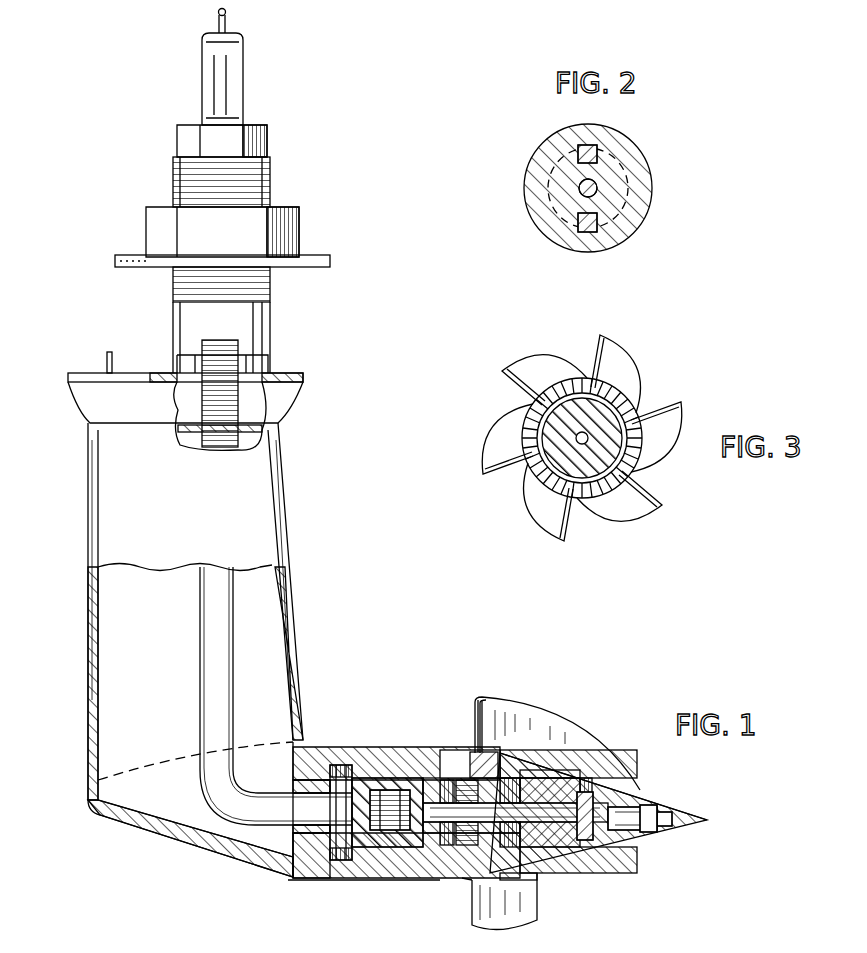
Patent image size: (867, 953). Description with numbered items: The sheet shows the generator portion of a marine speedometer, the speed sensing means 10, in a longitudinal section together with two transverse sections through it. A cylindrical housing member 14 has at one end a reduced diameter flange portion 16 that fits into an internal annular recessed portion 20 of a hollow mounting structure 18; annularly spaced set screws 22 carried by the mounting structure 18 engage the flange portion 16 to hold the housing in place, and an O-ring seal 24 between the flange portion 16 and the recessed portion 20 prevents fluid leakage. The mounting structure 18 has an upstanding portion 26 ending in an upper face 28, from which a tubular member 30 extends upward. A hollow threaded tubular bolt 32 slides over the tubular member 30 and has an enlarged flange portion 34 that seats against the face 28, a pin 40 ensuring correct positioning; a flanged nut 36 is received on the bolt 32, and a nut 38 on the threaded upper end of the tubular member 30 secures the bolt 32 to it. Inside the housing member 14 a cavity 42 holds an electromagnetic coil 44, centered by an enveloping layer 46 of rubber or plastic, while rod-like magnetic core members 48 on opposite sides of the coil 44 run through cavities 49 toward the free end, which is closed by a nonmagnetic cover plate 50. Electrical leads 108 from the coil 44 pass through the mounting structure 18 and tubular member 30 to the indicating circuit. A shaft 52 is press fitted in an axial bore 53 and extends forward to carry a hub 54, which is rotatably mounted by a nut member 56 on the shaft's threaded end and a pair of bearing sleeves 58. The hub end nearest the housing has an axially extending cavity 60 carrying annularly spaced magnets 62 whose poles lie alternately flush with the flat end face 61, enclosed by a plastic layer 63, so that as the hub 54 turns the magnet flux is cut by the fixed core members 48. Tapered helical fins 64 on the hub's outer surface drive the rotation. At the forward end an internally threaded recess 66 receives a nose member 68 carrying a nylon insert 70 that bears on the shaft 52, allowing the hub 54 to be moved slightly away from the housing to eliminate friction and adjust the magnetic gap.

In FIG. 1, the speed sensing means 10 is at (243, 878).
In FIG. 1, the cylindrical housing member 14 is at (357, 870).
In FIG. 2, the cylindrical housing member 14 is at (650, 212).
In FIG. 1, the flange portion 16 is at (320, 878).
In FIG. 1, the hollow mounting structure 18 is at (298, 519).
In FIG. 1, the internal annular recessed portion 20 is at (332, 770).
In FIG. 1, the set screws 22 is at (348, 778).
In FIG. 1, the O-ring seal 24 is at (290, 878).
In FIG. 1, the upstanding portion 26 is at (300, 640).
In FIG. 1, the upper face 28 is at (270, 430).
In FIG. 1, the tubular member 30 is at (240, 350).
In FIG. 1, the hollow threaded tubular bolt 32 is at (270, 322).
In FIG. 1, the enlarged flange portion 34 is at (78, 373).
In FIG. 1, the flanged nut 36 is at (300, 222).
In FIG. 1, the nut 38 is at (268, 142).
In FIG. 1, the pin 40 is at (113, 358).
In FIG. 1, the cavity 42 is at (378, 778).
In FIG. 2, the cavity 42 is at (612, 182).
In FIG. 1, the electromagnetic coil 44 is at (400, 835).
In FIG. 1, the enveloping layer 46 is at (340, 862).
In FIG. 1, the magnetic core members 48 is at (446, 778).
In FIG. 2, the magnetic core members 48 is at (600, 150).
In FIG. 1, the cavities 49 is at (462, 778).
In FIG. 1, the cover plate 50 is at (480, 700).
In FIG. 1, the shaft 52 is at (412, 778).
In FIG. 2, the shaft 52 is at (562, 236).
In FIG. 3, the shaft 52 is at (588, 395).
In FIG. 1, the axial bore 53 is at (440, 760).
In FIG. 1, the hub 54 is at (595, 862).
In FIG. 3, the hub 54 is at (640, 442).
In FIG. 1, the nut member 56 is at (612, 778).
In FIG. 1, the bearing sleeves 58 is at (496, 768).
In FIG. 1, the axially extending cavity 60 is at (492, 880).
In FIG. 1, the flat end face 61 is at (462, 882).
In FIG. 1, the magnets 62 is at (540, 790).
In FIG. 3, the magnets 62 is at (540, 405).
In FIG. 1, the enveloping layer of plastic material 63 is at (522, 772).
In FIG. 1, the fins 64 is at (520, 708).
In FIG. 3, the fins 64 is at (520, 370).
In FIG. 1, the internally threaded recess 66 is at (635, 800).
In FIG. 1, the nose member 68 is at (672, 814).
In FIG. 1, the insert 70 is at (652, 835).
In FIG. 1, the electrical leads 108 is at (233, 650).